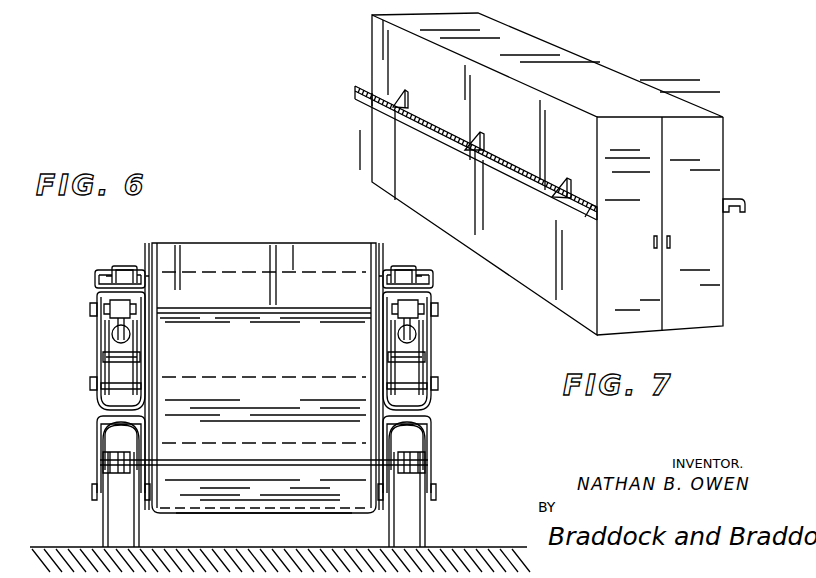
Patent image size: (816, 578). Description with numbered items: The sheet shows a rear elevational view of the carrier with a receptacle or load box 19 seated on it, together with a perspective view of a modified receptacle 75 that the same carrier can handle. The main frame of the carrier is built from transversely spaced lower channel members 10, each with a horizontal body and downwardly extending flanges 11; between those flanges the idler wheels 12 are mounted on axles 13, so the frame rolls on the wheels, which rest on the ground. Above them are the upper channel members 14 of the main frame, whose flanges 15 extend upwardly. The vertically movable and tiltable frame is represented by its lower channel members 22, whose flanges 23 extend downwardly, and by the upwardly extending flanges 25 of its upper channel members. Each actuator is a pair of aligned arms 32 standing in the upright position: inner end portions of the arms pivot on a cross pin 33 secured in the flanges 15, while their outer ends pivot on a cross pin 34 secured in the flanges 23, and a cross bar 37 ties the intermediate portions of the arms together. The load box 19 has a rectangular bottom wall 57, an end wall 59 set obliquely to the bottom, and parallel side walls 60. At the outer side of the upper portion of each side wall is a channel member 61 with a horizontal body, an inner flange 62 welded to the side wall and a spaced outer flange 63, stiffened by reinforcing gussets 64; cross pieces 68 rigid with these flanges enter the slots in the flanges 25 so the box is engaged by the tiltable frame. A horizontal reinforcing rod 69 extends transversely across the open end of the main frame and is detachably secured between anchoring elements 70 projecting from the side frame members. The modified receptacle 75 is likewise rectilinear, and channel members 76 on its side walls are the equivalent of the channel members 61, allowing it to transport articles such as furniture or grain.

In FIG. 6, the lower channel member 10 is at (110, 418).
In FIG. 6, the flange 11 is at (95, 443).
In FIG. 6, the idler wheel 12 is at (122, 531).
In FIG. 6, the axle 13 is at (150, 492).
In FIG. 6, the upper channel member 14 is at (140, 405).
In FIG. 6, the flange 15 is at (97, 401).
In FIG. 6, the receptacle or load box 19 is at (322, 245).
In FIG. 6, the lower channel member 22 is at (133, 298).
In FIG. 6, the flange 23 is at (97, 296).
In FIG. 6, the flange 25 is at (96, 280).
In FIG. 6, the arm 32 is at (105, 350).
In FIG. 6, the cross pin 33 is at (92, 384).
In FIG. 6, the cross pin 34 is at (91, 310).
In FIG. 6, the cross bar 37 is at (130, 357).
In FIG. 6, the bottom wall 57 is at (300, 513).
In FIG. 6, the end wall 59 is at (304, 398).
In FIG. 6, the side wall 60 is at (157, 477).
In FIG. 6, the channel member 61 is at (123, 270).
In FIG. 6, the inner flange 62 is at (151, 278).
In FIG. 6, the outer flange 63 is at (107, 276).
In FIG. 6, the reinforcing gusset 64 is at (147, 262).
In FIG. 6, the cross piece 68 is at (116, 267).
In FIG. 6, the reinforcing rod or bar 69 is at (270, 466).
In FIG. 6, the anchoring element 70 is at (103, 466).
In FIG. 7, the receptacle 75 is at (636, 92).
In FIG. 7, the channel member 76 is at (521, 184).